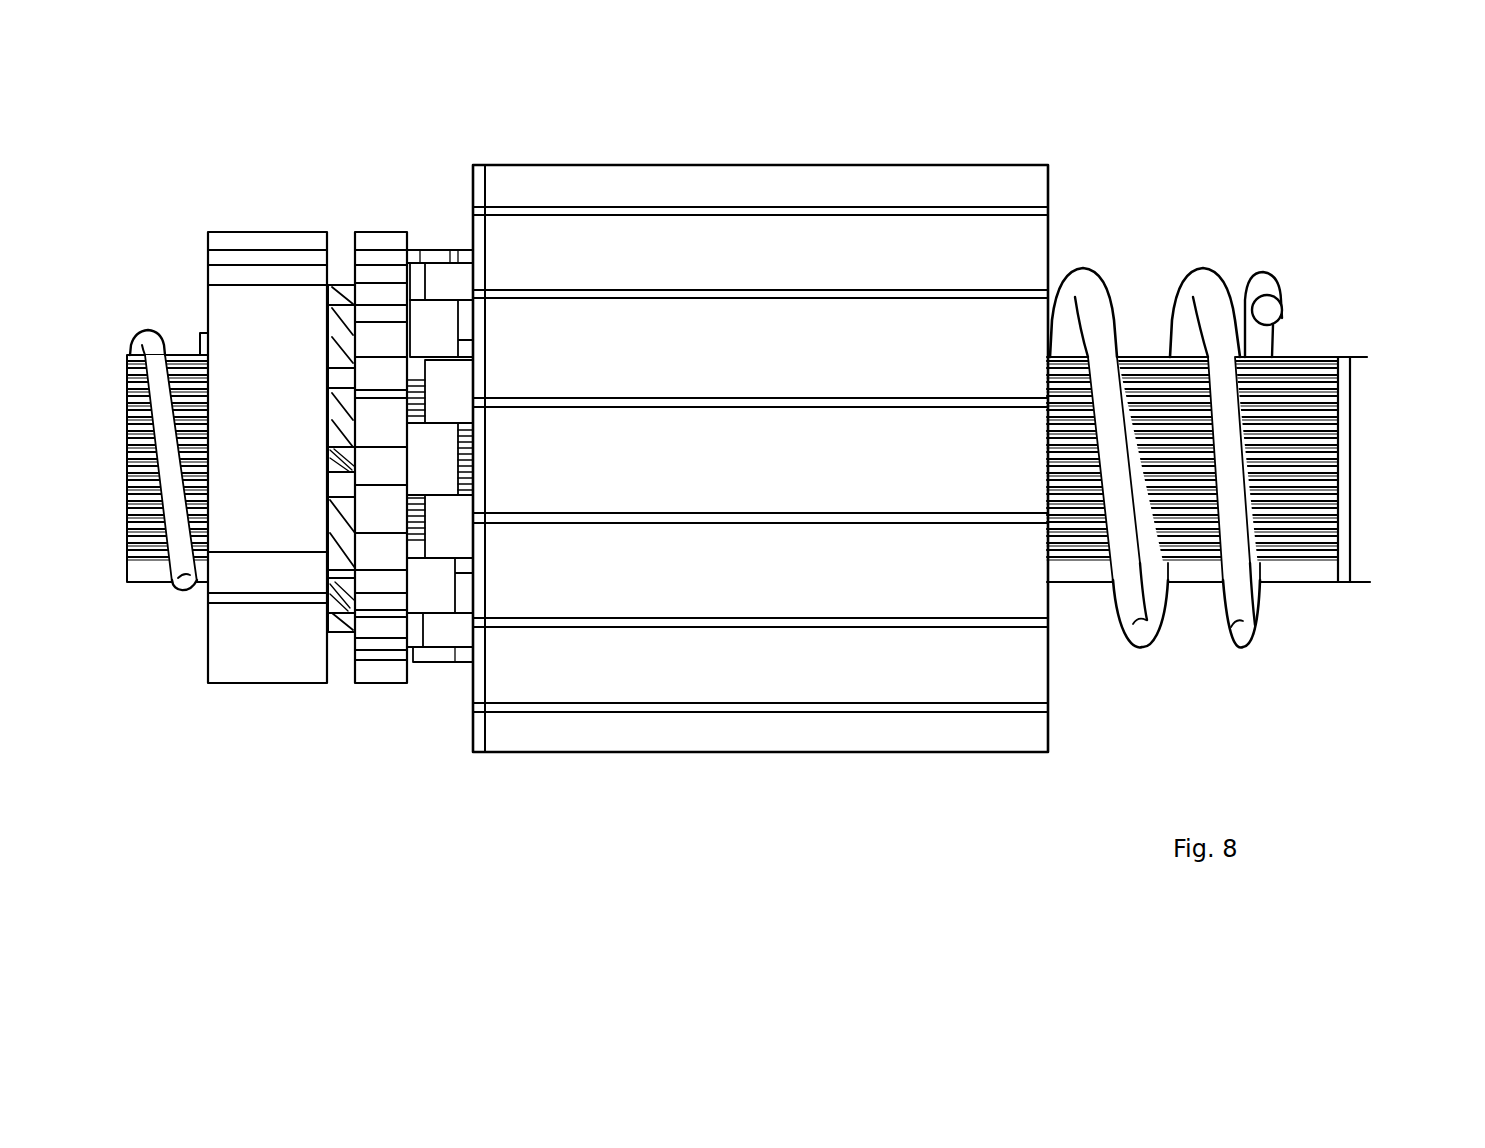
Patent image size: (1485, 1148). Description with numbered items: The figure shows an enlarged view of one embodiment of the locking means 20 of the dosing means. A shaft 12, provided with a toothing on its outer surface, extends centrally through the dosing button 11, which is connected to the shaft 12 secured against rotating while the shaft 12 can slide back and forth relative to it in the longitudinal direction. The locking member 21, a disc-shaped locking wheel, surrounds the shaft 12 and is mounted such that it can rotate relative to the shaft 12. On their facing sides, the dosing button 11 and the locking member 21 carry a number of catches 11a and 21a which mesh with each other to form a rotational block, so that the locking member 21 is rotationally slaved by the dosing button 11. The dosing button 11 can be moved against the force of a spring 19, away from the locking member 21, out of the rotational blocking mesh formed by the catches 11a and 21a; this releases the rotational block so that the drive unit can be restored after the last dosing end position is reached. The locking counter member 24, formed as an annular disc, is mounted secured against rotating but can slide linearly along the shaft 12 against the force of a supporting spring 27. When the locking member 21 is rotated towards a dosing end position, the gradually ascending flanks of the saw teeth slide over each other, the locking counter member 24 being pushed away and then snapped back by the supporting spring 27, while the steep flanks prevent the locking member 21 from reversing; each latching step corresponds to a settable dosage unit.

The dosing button 11 is at (690, 188).
The catches 11a is at (450, 277).
The shaft 12 is at (1330, 350).
The spring 19 is at (1202, 268).
The locking means 20 is at (303, 760).
The locking member 21 is at (378, 672).
The catches 21a is at (425, 322).
The locking counter member 24 is at (243, 670).
The supporting spring 27 is at (148, 328).